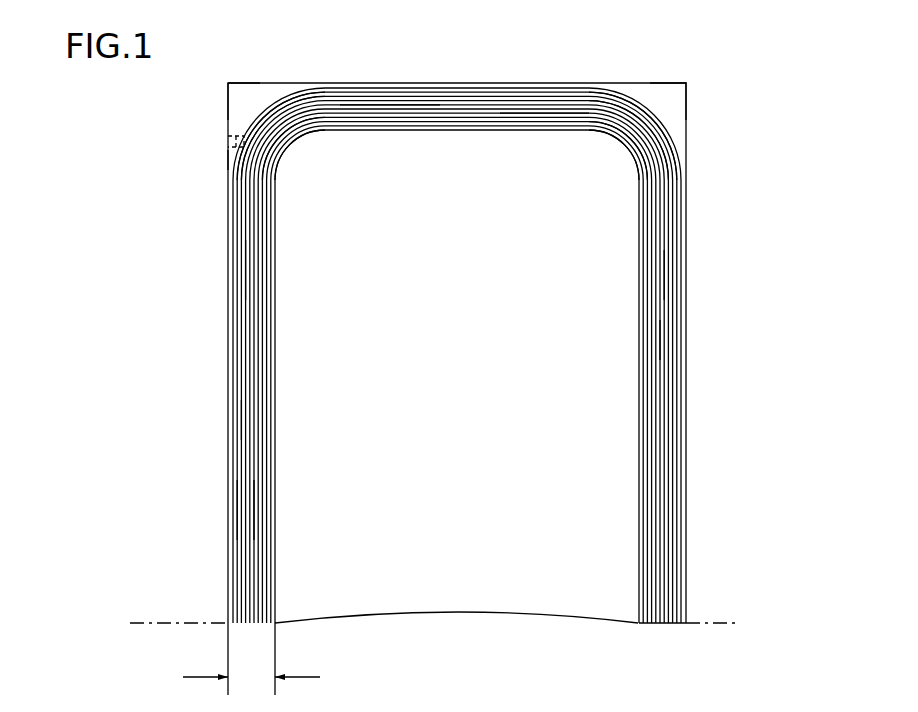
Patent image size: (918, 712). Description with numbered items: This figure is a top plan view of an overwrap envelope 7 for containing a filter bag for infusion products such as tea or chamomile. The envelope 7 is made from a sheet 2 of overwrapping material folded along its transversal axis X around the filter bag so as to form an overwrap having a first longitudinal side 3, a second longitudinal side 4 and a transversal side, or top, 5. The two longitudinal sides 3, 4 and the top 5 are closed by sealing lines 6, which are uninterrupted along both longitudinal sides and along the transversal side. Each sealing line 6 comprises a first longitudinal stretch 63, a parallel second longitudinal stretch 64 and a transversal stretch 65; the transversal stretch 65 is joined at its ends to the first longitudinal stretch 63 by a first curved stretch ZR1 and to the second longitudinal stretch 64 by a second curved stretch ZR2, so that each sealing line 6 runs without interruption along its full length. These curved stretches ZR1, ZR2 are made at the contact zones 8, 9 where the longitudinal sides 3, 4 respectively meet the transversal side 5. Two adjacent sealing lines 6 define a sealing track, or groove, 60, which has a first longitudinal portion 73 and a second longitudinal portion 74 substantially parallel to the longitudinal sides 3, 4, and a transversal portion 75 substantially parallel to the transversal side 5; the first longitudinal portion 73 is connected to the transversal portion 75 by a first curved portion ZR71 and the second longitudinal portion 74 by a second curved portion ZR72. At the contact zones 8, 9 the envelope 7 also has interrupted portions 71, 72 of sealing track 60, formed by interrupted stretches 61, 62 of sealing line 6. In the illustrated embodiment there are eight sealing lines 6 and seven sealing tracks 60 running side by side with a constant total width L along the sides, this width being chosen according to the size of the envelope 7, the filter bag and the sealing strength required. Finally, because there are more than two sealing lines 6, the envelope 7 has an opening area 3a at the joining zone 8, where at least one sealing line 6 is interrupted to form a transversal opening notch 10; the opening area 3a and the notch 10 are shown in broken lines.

The sheet of overwrapping material 2 is at (497, 527).
The first longitudinal side 3 is at (220, 342).
The opening area 3a is at (233, 146).
The second longitudinal side 4 is at (697, 374).
The transversal side (top) 5 is at (509, 74).
The sealing line 6 is at (238, 530).
The overwrap envelope 7 is at (236, 70).
The contact zone 8 is at (222, 100).
The contact zone 9 is at (692, 79).
The transversal opening notch 10 is at (228, 137).
The sealing track 60 is at (671, 630).
The interrupted stretch of sealing line 61 is at (258, 105).
The interrupted stretch of sealing line 62 is at (632, 100).
The first longitudinal stretch 63 is at (245, 272).
The second longitudinal stretch 64 is at (662, 278).
The transversal stretch 65 is at (388, 103).
The interrupted portion of sealing track 71 is at (252, 92).
The interrupted portion of sealing track 72 is at (663, 100).
The first longitudinal portion 73 is at (240, 418).
The second longitudinal portion 74 is at (658, 340).
The transversal portion 75 is at (547, 112).
The first curved stretch ZR1 is at (290, 113).
The second curved stretch ZR2 is at (650, 122).
The first curved portion ZR71 is at (267, 143).
The second curved portion ZR72 is at (610, 138).
The transversal axis X is at (148, 622).
The total width L is at (251, 664).